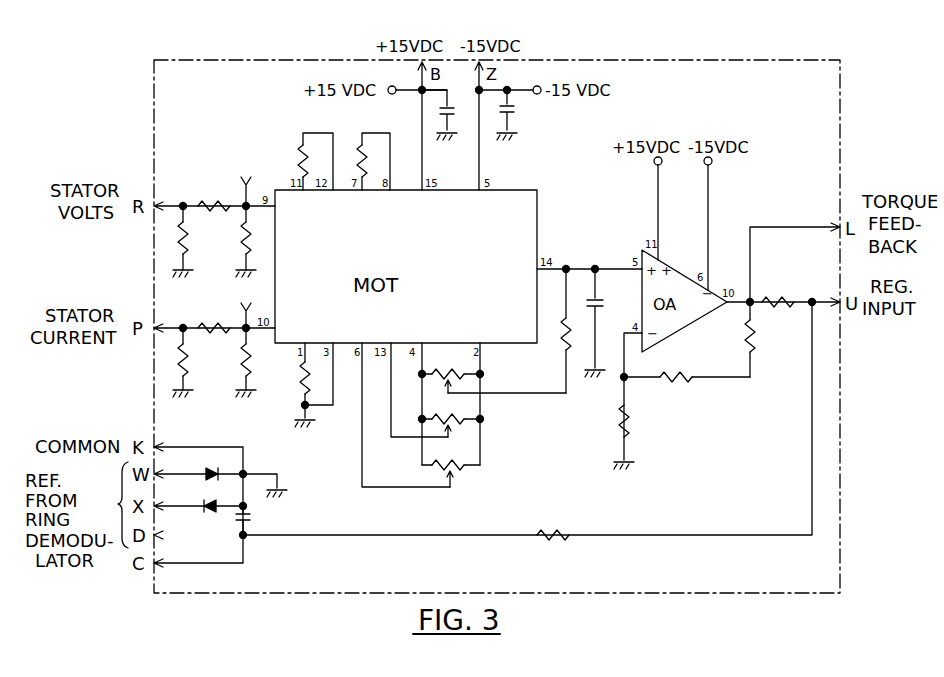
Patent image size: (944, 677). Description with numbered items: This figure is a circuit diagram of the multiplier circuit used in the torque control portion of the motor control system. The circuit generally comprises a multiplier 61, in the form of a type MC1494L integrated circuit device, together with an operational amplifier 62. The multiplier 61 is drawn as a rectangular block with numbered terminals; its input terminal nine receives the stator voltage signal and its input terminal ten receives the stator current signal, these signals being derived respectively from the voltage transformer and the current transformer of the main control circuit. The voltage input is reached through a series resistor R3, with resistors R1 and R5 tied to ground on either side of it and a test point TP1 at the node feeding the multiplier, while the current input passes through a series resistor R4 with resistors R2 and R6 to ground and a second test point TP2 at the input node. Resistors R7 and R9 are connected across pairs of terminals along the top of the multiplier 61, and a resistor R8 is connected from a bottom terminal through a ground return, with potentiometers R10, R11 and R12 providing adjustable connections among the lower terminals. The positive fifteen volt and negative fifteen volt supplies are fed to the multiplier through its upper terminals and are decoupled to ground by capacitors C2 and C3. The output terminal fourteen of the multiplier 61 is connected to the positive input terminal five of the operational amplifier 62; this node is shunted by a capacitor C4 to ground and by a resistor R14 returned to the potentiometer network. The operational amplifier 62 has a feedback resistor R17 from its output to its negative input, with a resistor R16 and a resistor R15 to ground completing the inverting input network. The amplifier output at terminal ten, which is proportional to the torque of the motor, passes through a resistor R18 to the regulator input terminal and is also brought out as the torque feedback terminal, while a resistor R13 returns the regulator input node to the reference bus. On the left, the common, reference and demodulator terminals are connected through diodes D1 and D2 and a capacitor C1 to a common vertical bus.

The multiplier 61 is at (532, 190).
The operational amplifier 62 is at (690, 324).
The resistor R1 is at (188, 240).
The resistor R2 is at (187, 371).
The resistor R3 is at (214, 196).
The resistor R4 is at (214, 319).
The resistor R5 is at (246, 238).
The resistor R6 is at (243, 352).
The resistor R7 is at (298, 150).
The resistor R8 is at (298, 380).
The resistor R9 is at (357, 150).
The potentiometer R10 is at (494, 372).
The potentiometer R11 is at (455, 420).
The potentiometer R12 is at (458, 463).
The resistor R13 is at (550, 520).
The resistor R14 is at (556, 350).
The resistor R15 is at (630, 432).
The resistor R16 is at (687, 365).
The resistor R17 is at (758, 342).
The resistor R18 is at (777, 291).
The capacitor C1 is at (256, 526).
The capacitor C2 is at (458, 118).
The capacitor C3 is at (514, 110).
The capacitor C4 is at (604, 306).
The diode D1 is at (206, 465).
The diode D2 is at (198, 497).
The test point TP1 is at (241, 181).
The test point TP2 is at (241, 306).